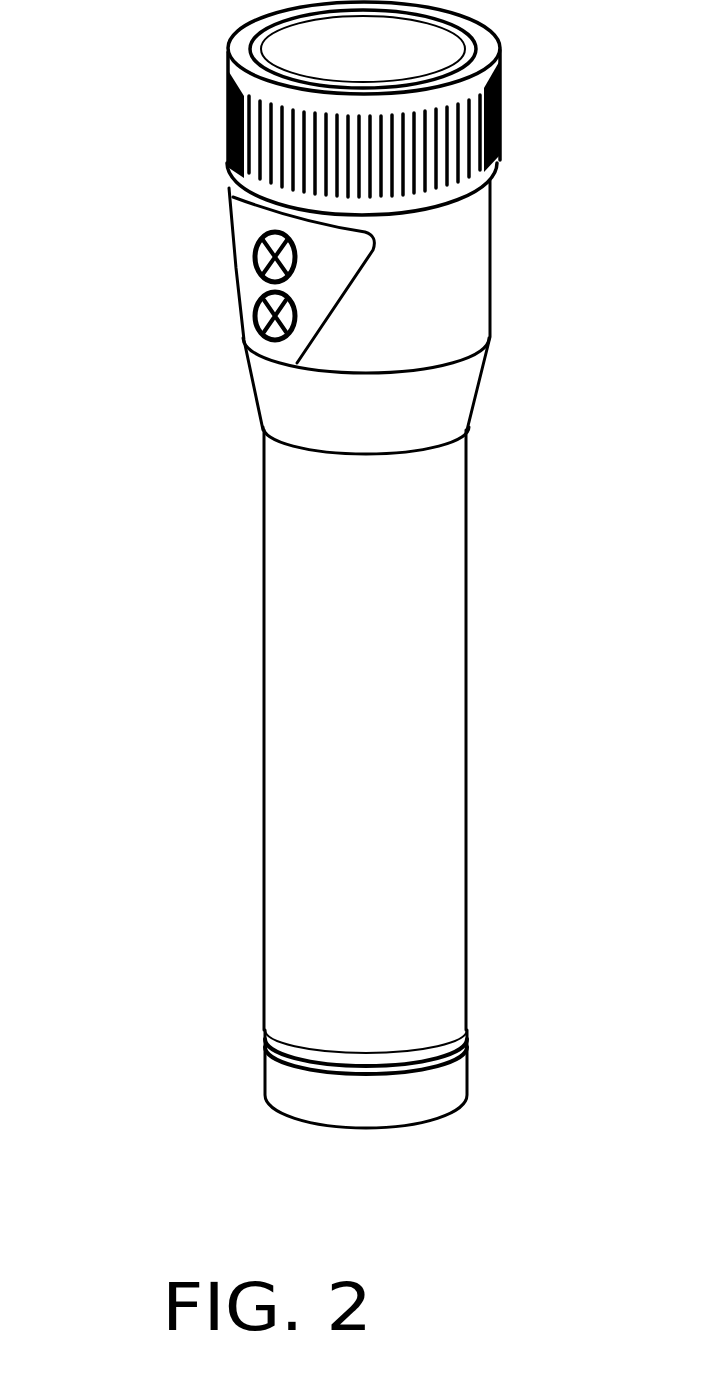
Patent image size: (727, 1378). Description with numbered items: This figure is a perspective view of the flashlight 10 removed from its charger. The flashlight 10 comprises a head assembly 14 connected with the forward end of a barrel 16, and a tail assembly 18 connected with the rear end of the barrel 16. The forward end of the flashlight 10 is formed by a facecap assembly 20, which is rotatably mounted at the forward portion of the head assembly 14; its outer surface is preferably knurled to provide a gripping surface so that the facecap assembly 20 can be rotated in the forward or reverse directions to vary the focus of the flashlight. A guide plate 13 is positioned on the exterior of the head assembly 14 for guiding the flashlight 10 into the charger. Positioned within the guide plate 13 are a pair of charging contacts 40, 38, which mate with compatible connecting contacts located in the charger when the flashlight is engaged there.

The flashlight 10 is at (339, 565).
The guide plate 13 is at (347, 271).
The head assembly 14 is at (490, 270).
The barrel 16 is at (467, 662).
The tail assembly 18 is at (470, 1068).
The facecap assembly 20 is at (500, 80).
The charging contact 38 is at (256, 322).
The charging contact 40 is at (258, 256).